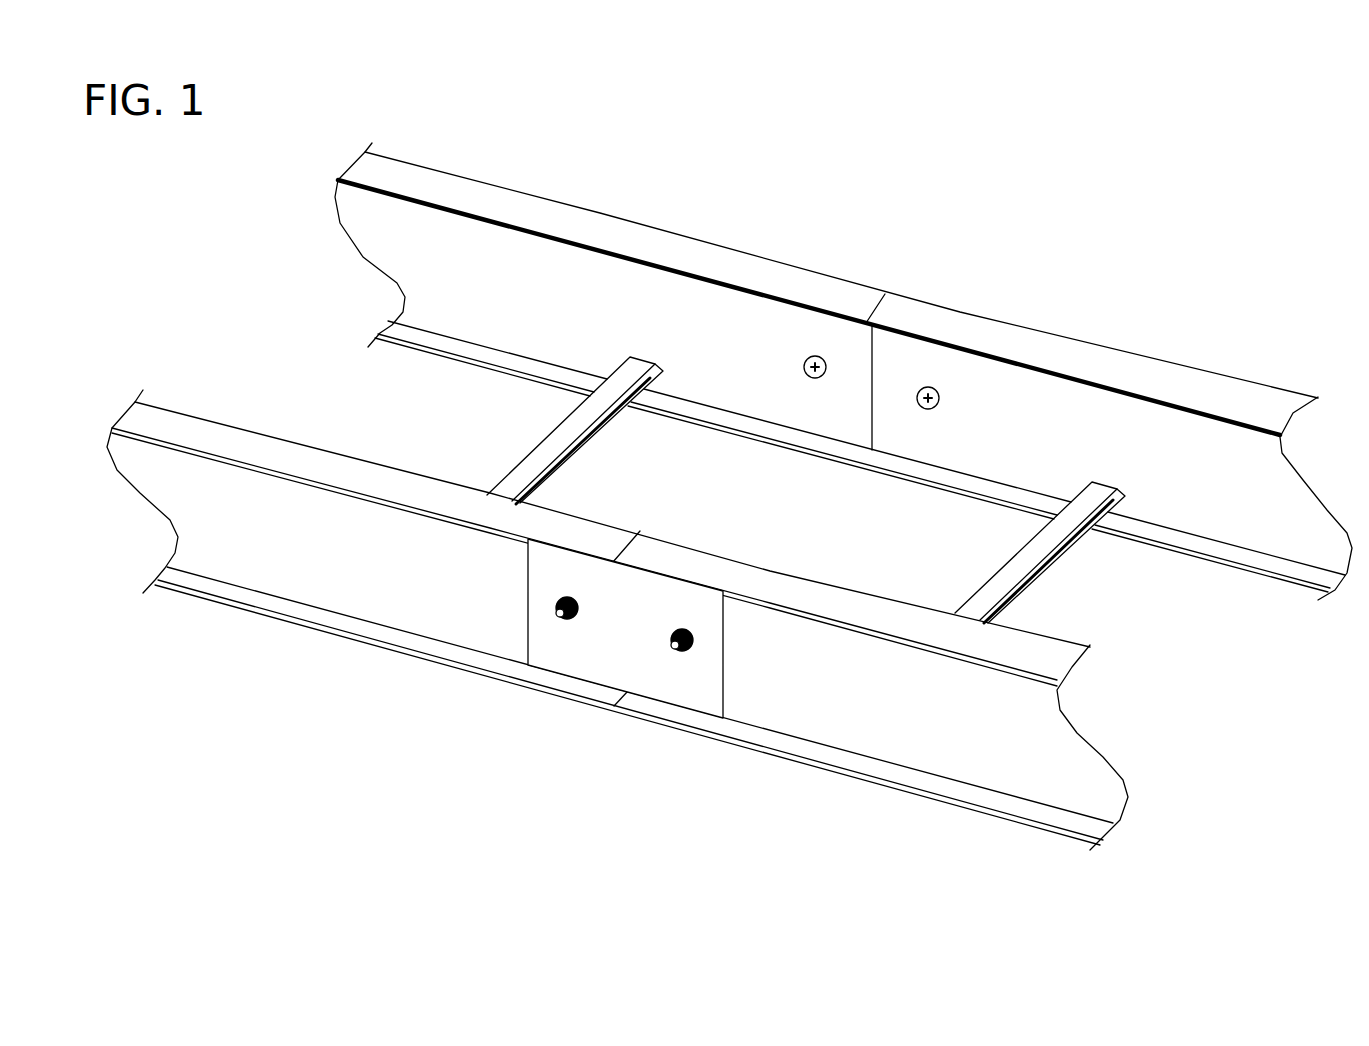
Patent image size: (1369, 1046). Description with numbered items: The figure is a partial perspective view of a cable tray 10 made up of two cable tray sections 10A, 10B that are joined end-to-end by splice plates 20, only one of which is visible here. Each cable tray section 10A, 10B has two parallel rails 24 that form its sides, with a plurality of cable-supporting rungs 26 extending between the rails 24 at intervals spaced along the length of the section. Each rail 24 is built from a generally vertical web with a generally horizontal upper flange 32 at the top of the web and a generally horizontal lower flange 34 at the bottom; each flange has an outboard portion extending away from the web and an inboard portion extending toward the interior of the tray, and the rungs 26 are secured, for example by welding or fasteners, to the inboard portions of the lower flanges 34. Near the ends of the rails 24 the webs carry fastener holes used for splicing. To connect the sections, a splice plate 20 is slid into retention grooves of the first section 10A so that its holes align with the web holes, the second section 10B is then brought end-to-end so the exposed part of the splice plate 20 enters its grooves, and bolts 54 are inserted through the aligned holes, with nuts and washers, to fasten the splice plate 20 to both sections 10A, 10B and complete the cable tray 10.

The cable tray 10 is at (729, 481).
The first cable tray section 10A is at (660, 222).
The second cable tray section 10B is at (1141, 340).
The splice plate 20 is at (603, 652).
The rail 24 is at (728, 481).
The cable-supporting rung 26 is at (570, 433).
The upper flange 32 is at (762, 275).
The lower flange 34 is at (303, 620).
The bolt 54 is at (807, 370).